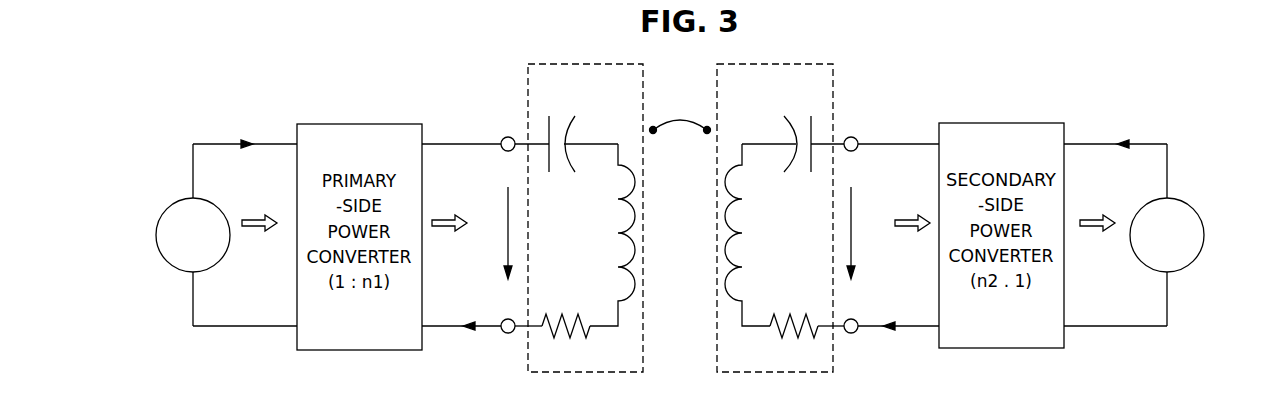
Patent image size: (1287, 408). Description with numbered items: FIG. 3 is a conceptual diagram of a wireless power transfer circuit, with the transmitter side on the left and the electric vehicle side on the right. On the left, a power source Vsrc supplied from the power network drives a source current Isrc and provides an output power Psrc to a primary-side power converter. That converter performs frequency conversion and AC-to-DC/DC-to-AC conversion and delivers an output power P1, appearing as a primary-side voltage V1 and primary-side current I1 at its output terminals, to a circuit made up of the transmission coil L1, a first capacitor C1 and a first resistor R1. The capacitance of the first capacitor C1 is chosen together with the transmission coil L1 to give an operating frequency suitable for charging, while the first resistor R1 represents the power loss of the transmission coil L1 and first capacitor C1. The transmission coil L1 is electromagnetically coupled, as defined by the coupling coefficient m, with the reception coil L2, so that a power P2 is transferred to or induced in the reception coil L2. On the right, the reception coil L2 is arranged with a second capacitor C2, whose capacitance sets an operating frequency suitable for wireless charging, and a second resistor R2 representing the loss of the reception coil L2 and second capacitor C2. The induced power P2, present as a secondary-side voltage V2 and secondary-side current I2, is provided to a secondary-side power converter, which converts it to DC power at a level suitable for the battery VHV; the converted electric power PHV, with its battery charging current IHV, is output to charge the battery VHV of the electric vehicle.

The power source Vsrc is at (172, 235).
The source current Isrc is at (245, 131).
The output power Psrc is at (258, 210).
The output power of primary-side power converter P1 is at (449, 210).
The primary-side voltage V1 is at (497, 233).
The primary-side current I1 is at (466, 312).
The first capacitor C1 is at (583, 128).
The transmission coil L1 is at (612, 235).
The first resistor R1 is at (566, 309).
The coupling coefficient m is at (680, 116).
The second capacitor C2 is at (776, 128).
The reception coil L2 is at (747, 235).
The second resistor R2 is at (794, 309).
The secondary-side voltage V2 is at (864, 233).
The power induced in reception coil P2 is at (912, 210).
The secondary-side current I2 is at (887, 312).
The battery charging current IHV is at (1115, 131).
The electric power converted for battery PHV is at (1096, 210).
The battery VHV is at (1191, 235).